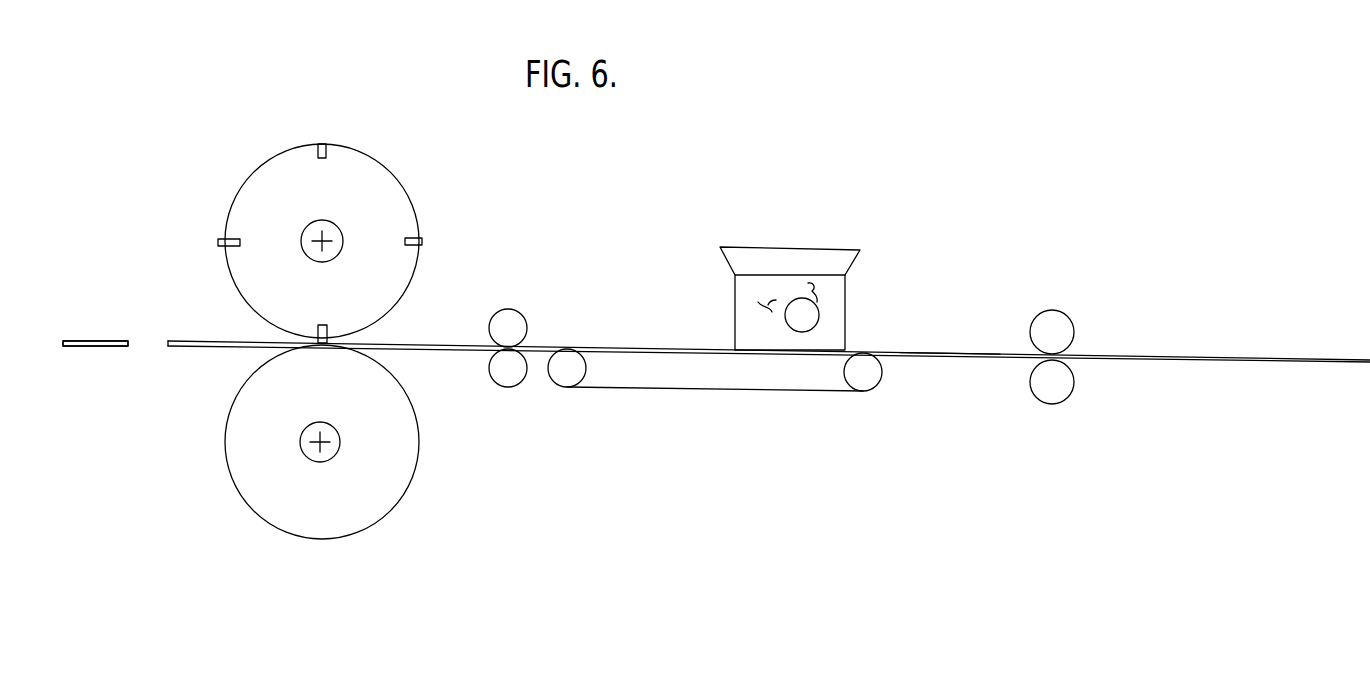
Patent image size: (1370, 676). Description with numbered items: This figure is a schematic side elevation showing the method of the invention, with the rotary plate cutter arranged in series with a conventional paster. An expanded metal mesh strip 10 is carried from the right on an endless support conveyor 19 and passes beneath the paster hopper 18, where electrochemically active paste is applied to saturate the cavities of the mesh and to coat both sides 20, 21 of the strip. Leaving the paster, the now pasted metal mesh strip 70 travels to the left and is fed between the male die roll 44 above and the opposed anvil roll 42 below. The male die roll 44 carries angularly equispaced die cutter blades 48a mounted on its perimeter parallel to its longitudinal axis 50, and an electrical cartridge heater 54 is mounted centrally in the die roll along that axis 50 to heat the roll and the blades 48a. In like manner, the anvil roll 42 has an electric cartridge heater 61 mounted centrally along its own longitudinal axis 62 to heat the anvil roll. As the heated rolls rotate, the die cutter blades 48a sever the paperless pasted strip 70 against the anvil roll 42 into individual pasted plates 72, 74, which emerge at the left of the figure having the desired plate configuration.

The expanded metal mesh strip 10 is at (1020, 354).
The paster hopper 18 is at (838, 306).
The endless support conveyor 19 is at (717, 391).
The side of mesh strip 20 is at (950, 353).
The side of mesh strip 21 is at (950, 354).
The anvil roll 42 is at (417, 468).
The male die roll 44 is at (393, 177).
The die cutter blade 48a is at (322, 144).
The longitudinal axis 50 is at (320, 241).
The electrical cartridge heater 54 is at (306, 254).
The electric cartridge heater 61 is at (307, 458).
The longitudinal axis 62 is at (318, 440).
The pasted metal mesh strip 70 is at (540, 346).
The plate 72 is at (112, 341).
The plate 74 is at (95, 343).